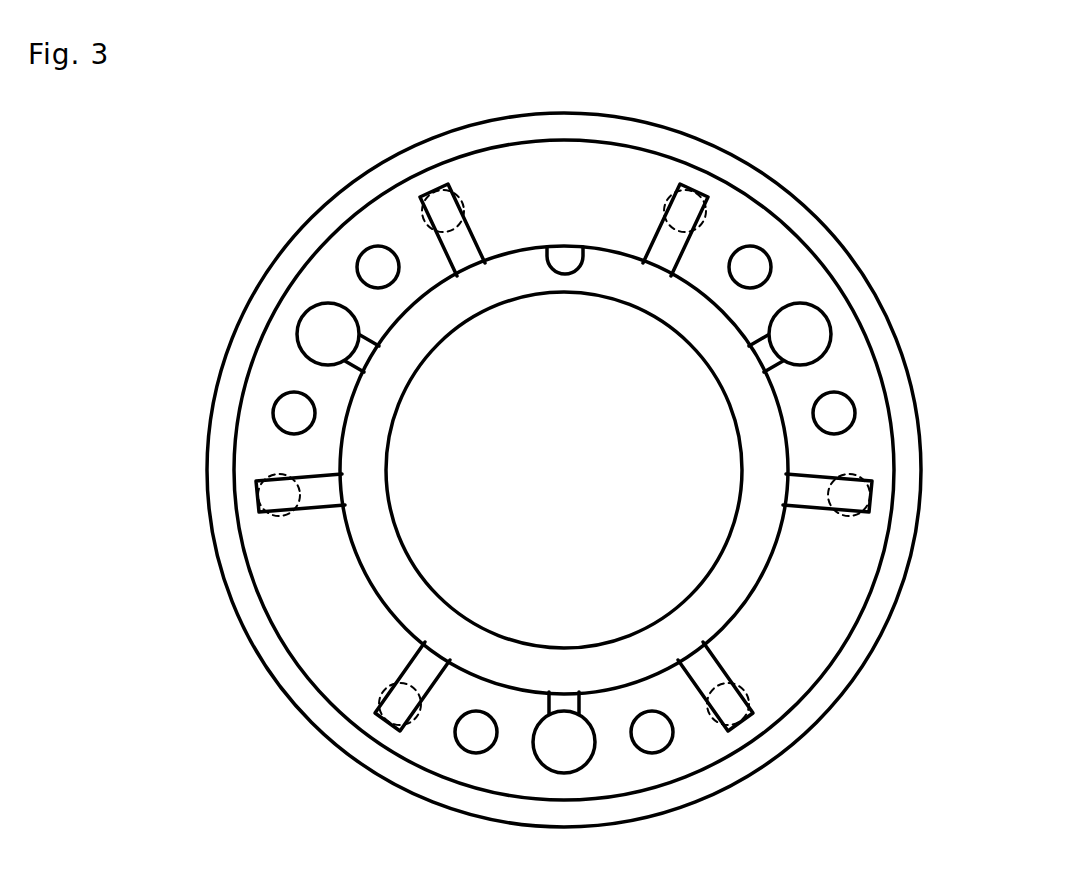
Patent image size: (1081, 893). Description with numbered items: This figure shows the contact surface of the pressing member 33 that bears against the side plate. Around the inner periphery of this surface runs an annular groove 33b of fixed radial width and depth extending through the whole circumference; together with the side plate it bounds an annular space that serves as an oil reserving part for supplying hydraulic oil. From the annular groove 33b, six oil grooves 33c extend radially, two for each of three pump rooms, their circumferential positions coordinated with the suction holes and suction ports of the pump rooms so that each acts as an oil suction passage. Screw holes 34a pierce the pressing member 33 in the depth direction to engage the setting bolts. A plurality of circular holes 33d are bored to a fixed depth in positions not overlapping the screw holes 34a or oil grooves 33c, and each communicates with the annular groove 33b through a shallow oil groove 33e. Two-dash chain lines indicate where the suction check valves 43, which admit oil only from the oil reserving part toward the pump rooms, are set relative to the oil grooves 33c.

The pressing member 33 is at (823, 625).
The annular groove 33b is at (587, 247).
The oil groove 33c is at (480, 248).
The circular hole 33d is at (317, 328).
The shallow oil groove 33e is at (352, 368).
The screw hole 34a is at (368, 262).
The suction check valve 43 is at (423, 224).